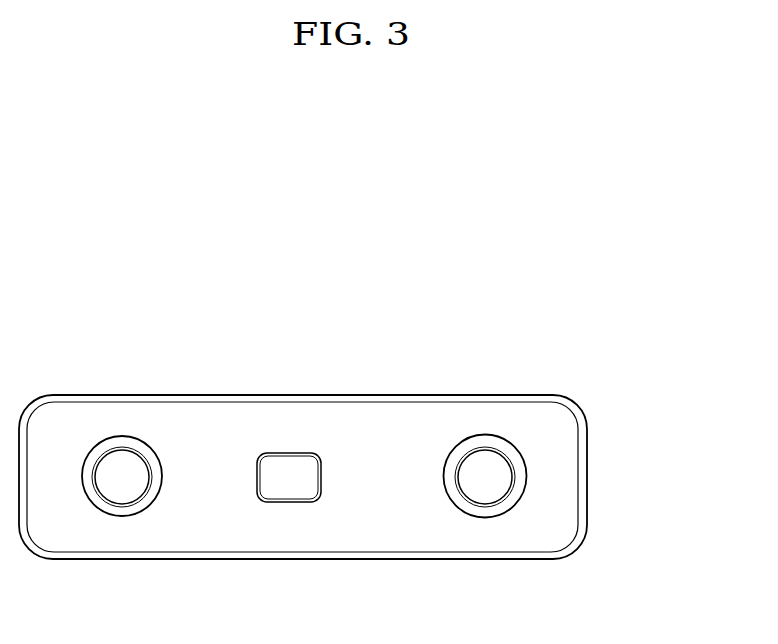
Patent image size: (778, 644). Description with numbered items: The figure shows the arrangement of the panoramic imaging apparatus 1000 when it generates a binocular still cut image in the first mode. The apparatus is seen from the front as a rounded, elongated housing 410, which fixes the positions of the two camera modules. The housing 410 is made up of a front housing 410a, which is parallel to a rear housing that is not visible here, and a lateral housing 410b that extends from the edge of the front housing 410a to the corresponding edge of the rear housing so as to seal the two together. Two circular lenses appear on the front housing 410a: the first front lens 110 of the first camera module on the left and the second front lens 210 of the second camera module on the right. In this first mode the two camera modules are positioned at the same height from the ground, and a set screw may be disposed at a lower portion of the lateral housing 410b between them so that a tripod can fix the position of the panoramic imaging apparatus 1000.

The panoramic imaging apparatus 1000 is at (216, 327).
The first front lens 110 is at (100, 440).
The second front lens 210 is at (485, 424).
The housing 410 is at (628, 346).
The front housing 410a is at (570, 466).
The lateral housing 410b is at (572, 400).